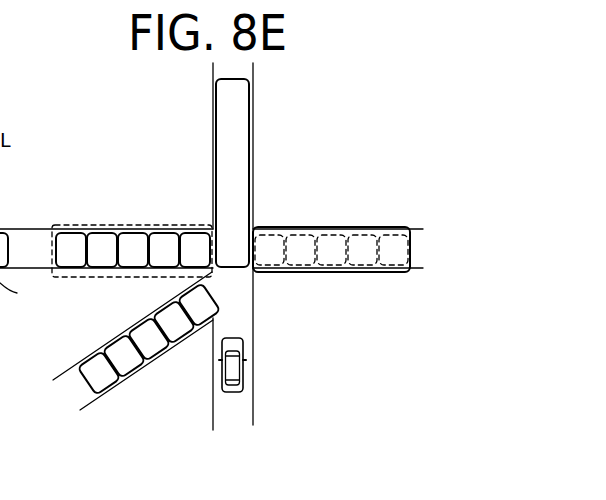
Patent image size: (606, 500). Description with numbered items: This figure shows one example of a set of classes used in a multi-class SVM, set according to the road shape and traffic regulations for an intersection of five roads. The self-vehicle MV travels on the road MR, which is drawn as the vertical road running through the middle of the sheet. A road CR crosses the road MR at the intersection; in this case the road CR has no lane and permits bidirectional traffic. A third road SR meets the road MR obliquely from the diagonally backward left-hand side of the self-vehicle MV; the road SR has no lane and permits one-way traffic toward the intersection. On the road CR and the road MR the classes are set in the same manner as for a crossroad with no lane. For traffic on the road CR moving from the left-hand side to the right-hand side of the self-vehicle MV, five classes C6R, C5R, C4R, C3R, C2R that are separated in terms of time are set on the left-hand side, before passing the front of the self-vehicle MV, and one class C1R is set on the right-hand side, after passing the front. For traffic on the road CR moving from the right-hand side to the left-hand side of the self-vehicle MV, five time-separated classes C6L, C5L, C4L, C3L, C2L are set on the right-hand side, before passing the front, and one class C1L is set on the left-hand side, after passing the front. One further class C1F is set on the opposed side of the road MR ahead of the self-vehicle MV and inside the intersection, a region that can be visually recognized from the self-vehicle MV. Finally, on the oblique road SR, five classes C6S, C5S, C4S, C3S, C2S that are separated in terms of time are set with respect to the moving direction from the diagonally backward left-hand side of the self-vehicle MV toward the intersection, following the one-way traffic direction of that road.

The road MR is at (253, 365).
The road CR is at (413, 227).
The road SR is at (90, 405).
The self-vehicle MV is at (233, 368).
The class C1F is at (250, 98).
The class C1L is at (85, 232).
The class C1R is at (300, 227).
The class C2R is at (195, 237).
The class C3R is at (168, 237).
The class C4R is at (135, 237).
The class C5R is at (103, 237).
The class C6R is at (72, 238).
The class C2L is at (268, 274).
The class C3L is at (300, 274).
The class C4L is at (330, 274).
The class C5L is at (367, 274).
The class C6L is at (393, 274).
The class C2S is at (203, 313).
The class C3S is at (182, 330).
The class C4S is at (147, 332).
The class C5S is at (110, 348).
The class C6S is at (90, 368).